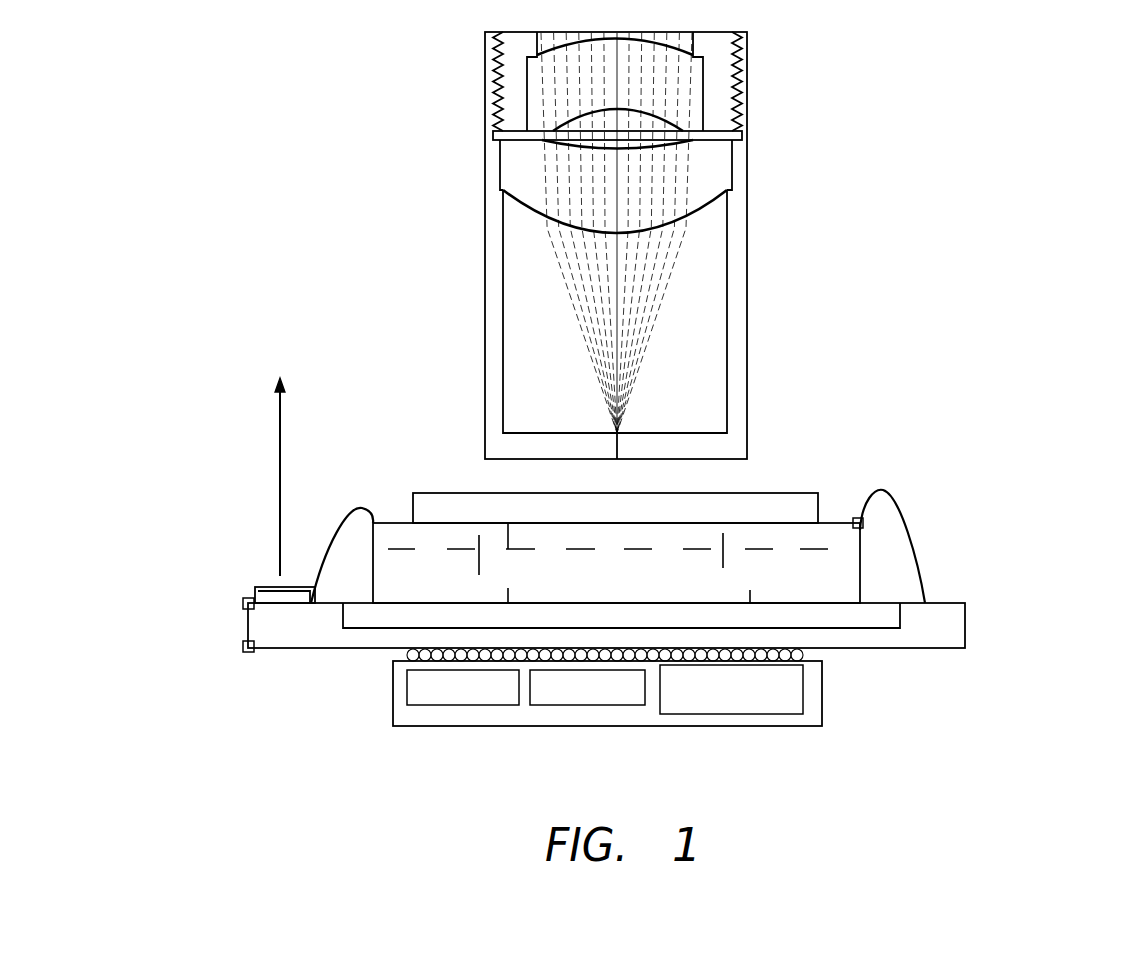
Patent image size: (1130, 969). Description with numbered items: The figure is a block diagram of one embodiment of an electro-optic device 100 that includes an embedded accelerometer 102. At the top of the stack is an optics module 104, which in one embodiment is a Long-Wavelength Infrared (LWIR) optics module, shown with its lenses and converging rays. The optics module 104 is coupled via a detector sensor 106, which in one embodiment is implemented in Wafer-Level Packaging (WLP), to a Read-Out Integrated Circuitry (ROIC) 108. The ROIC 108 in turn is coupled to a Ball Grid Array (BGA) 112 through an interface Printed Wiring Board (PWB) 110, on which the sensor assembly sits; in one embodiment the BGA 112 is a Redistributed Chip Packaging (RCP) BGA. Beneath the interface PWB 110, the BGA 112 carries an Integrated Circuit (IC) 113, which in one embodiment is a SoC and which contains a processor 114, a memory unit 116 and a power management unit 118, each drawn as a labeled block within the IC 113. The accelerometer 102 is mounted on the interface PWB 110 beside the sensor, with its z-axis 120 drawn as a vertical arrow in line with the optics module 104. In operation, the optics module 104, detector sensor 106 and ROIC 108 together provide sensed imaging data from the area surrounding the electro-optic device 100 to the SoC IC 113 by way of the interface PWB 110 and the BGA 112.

The electro-optic device 100 is at (305, 139).
The accelerometer 102 is at (255, 590).
The optics module 104 is at (748, 252).
The detector sensor 106 is at (817, 492).
The Read-Out Integrated Circuitry (ROIC) 108 is at (860, 541).
The interface Printed Wiring Board (PWB) 110 is at (965, 638).
The Ball Grid Array (BGA) 112 is at (638, 718).
The Integrated Circuit (IC) 113 is at (408, 726).
The processor 114 is at (467, 705).
The memory unit 116 is at (593, 705).
The power management unit 118 is at (765, 714).
The z-axis 120 is at (278, 440).